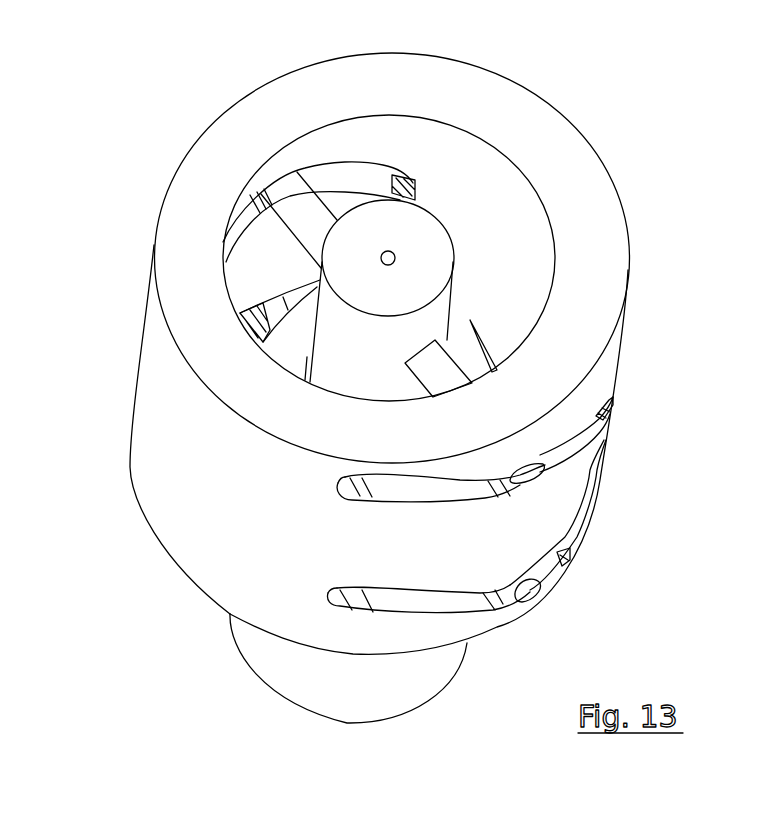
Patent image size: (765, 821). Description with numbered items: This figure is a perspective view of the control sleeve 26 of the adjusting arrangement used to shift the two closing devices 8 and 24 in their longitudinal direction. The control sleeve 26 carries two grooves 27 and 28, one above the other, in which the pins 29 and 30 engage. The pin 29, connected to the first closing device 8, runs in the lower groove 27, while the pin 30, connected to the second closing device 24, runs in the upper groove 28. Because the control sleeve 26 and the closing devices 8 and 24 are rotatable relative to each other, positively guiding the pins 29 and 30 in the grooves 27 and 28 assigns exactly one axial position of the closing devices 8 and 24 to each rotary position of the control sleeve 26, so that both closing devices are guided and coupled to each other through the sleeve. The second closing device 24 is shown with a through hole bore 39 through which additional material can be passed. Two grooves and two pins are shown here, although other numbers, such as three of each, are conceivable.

The first closing device 8 is at (282, 352).
The second closing device 24 is at (413, 240).
The control sleeve 26 is at (556, 160).
The lower groove 27 is at (568, 555).
The upper groove 28 is at (580, 433).
The pin 29 is at (530, 597).
The pin 30 is at (302, 212).
The through hole bore 39 is at (388, 250).